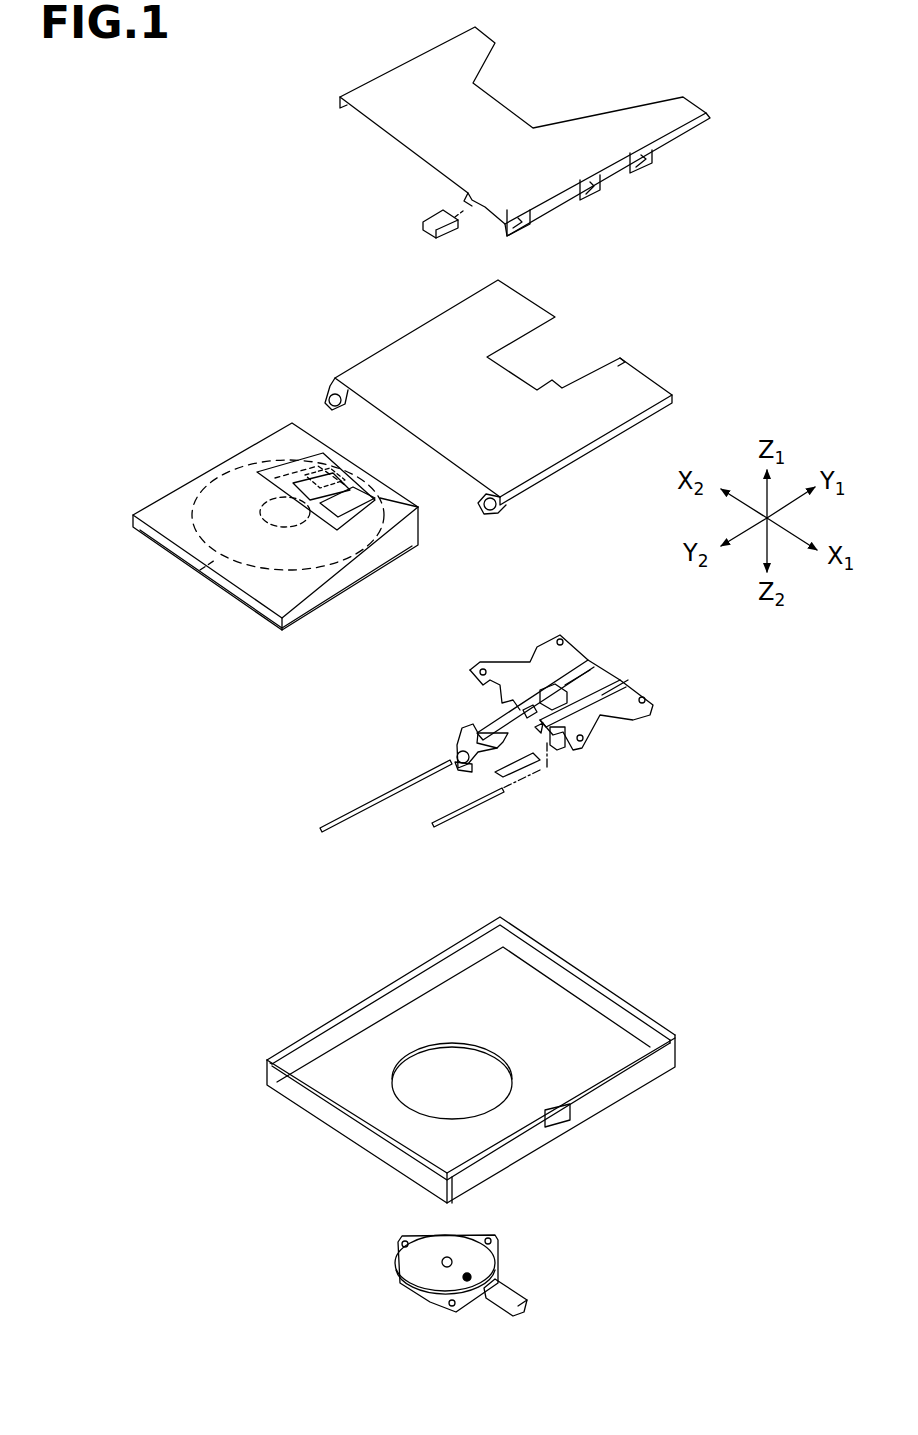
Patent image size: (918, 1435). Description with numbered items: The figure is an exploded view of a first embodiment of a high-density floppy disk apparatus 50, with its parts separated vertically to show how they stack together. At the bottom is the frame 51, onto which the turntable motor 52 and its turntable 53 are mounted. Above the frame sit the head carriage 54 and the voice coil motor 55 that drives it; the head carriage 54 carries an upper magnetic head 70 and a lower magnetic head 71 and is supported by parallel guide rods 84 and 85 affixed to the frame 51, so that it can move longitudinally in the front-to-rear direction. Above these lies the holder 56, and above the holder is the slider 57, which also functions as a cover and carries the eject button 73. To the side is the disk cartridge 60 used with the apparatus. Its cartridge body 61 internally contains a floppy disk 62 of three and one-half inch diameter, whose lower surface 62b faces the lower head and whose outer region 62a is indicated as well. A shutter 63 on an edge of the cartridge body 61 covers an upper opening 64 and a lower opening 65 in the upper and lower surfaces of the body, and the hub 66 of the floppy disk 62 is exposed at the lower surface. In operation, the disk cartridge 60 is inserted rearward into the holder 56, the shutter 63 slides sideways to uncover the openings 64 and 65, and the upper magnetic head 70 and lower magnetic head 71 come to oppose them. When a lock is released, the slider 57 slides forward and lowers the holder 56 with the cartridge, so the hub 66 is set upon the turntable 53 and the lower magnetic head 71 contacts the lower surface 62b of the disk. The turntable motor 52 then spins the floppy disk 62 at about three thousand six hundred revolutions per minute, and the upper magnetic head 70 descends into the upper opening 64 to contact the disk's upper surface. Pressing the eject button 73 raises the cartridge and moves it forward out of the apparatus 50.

The floppy disk apparatus 50 is at (740, 25).
The frame 51 is at (632, 997).
The turntable motor 52 is at (447, 1305).
The turntable 53 is at (482, 1260).
The head carriage 54 is at (455, 725).
The voice coil motor 55 is at (590, 640).
The holder 56 is at (372, 352).
The slider 57 is at (377, 72).
The disk cartridge 60 is at (187, 478).
The cartridge body 61 is at (307, 617).
The floppy disk 62 is at (230, 477).
The disc recording surface 62a is at (200, 533).
The lower surface 62b is at (200, 570).
The shutter 63 is at (377, 500).
The upper opening 64 is at (290, 457).
The lower opening 65 is at (330, 463).
The hub 66 is at (265, 540).
The upper magnetic head 70 is at (460, 757).
The lower magnetic head 71 is at (462, 767).
The eject button 73 is at (420, 218).
The guide rod 84 is at (487, 792).
The guide rod 85 is at (350, 808).